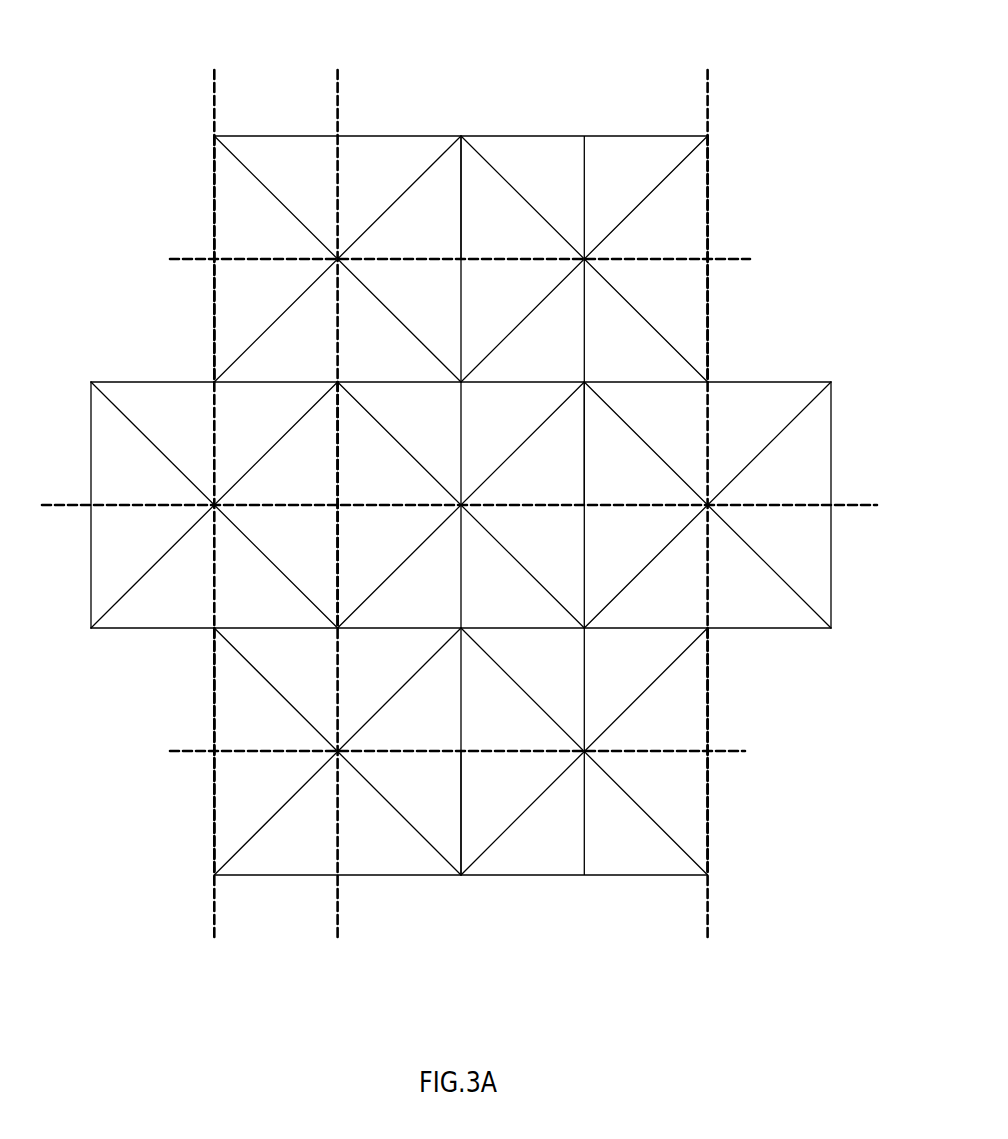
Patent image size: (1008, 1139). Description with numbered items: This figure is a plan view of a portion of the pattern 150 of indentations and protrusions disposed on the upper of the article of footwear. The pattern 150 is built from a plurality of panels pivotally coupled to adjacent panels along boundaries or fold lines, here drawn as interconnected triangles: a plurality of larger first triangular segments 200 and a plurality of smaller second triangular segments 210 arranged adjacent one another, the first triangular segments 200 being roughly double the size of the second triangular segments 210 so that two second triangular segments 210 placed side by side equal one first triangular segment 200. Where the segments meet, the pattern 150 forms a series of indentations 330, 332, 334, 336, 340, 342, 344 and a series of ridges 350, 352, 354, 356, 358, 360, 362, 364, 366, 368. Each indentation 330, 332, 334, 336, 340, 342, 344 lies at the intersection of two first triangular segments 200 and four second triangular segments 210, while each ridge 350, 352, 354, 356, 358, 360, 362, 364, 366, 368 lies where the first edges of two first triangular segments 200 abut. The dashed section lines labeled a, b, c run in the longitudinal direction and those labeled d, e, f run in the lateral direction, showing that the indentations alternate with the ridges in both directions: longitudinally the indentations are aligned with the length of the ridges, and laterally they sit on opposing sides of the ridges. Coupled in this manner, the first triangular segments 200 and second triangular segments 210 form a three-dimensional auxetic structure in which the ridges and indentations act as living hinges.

The pattern 150 is at (818, 79).
The first triangular segment 200 is at (237, 307).
The second triangular segment 210 is at (285, 183).
The indentation 330 is at (172, 488).
The indentation 332 is at (293, 240).
The indentation 334 is at (296, 734).
The indentation 336 is at (750, 494).
The indentation 340 is at (623, 243).
The indentation 342 is at (622, 735).
The indentation 344 is at (497, 491).
The ridge 350 is at (91, 567).
The ridge 352 is at (214, 330).
The ridge 354 is at (214, 805).
The ridge 356 is at (338, 415).
The ridge 358 is at (461, 166).
The ridge 360 is at (461, 838).
The ridge 362 is at (584, 422).
The ridge 364 is at (708, 170).
The ridge 366 is at (708, 798).
The ridge 368 is at (833, 590).